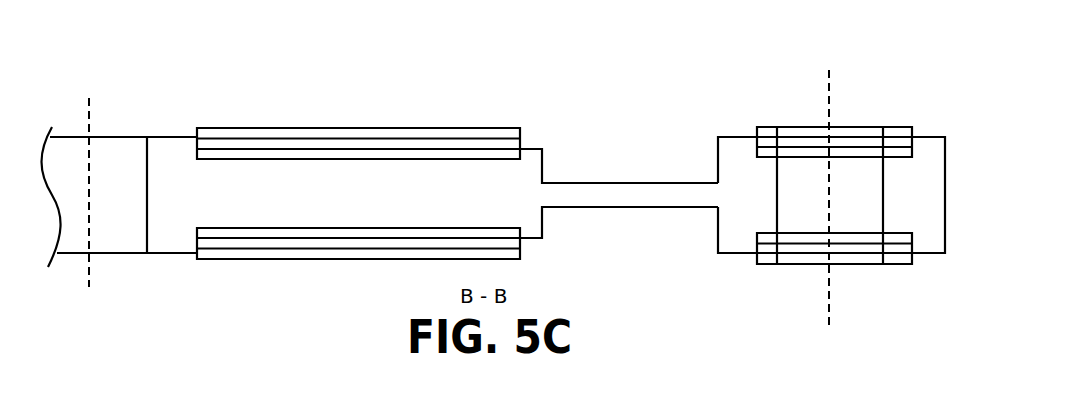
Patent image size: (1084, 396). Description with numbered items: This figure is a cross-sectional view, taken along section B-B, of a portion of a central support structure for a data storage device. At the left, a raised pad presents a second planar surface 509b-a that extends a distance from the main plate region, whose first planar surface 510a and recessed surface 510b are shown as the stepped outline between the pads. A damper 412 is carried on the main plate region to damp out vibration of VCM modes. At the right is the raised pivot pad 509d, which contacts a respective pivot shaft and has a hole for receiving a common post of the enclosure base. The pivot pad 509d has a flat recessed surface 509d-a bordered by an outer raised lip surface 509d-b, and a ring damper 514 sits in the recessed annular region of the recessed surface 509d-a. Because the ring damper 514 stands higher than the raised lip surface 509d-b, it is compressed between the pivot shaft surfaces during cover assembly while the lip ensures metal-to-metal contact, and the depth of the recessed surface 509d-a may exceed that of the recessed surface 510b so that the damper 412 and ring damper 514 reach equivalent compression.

The second planar surface 509b-a is at (169, 130).
The damper 412 is at (297, 128).
The first planar surface 510a is at (528, 145).
The recessed surface 510b is at (453, 160).
The outer raised lip surface 509d-b is at (737, 137).
The ring damper 514 is at (890, 125).
The raised pivot pad 509d is at (816, 182).
The recessed surface 509d-a is at (900, 158).